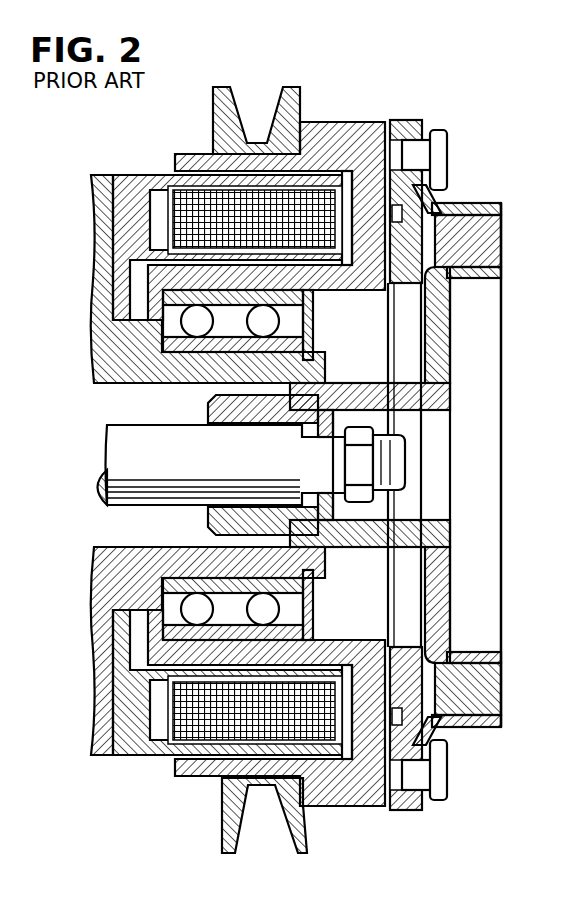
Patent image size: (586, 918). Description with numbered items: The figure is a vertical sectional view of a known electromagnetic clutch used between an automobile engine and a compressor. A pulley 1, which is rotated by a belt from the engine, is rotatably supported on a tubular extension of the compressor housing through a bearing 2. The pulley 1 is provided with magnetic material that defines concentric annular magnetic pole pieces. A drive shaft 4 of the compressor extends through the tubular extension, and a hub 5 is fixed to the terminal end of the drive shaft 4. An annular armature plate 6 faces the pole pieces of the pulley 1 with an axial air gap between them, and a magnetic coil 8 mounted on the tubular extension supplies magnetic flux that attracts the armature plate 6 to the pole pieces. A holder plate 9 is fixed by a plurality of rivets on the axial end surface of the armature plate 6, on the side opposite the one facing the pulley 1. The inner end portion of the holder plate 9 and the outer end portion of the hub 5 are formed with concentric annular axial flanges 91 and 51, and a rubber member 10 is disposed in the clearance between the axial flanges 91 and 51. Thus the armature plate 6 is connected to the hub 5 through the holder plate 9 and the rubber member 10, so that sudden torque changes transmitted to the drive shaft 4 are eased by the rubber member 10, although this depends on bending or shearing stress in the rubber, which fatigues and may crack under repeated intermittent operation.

The pulley 1 is at (343, 138).
The bearing 2 is at (193, 337).
The drive shaft 4 is at (285, 468).
The hub 5 is at (445, 395).
The armature plate 6 is at (432, 190).
The magnetic coil 8 is at (190, 205).
The holder plate 9 is at (437, 200).
The rubber member 10 is at (501, 237).
The axial flange 51 is at (501, 272).
The axial flange 91 is at (498, 203).